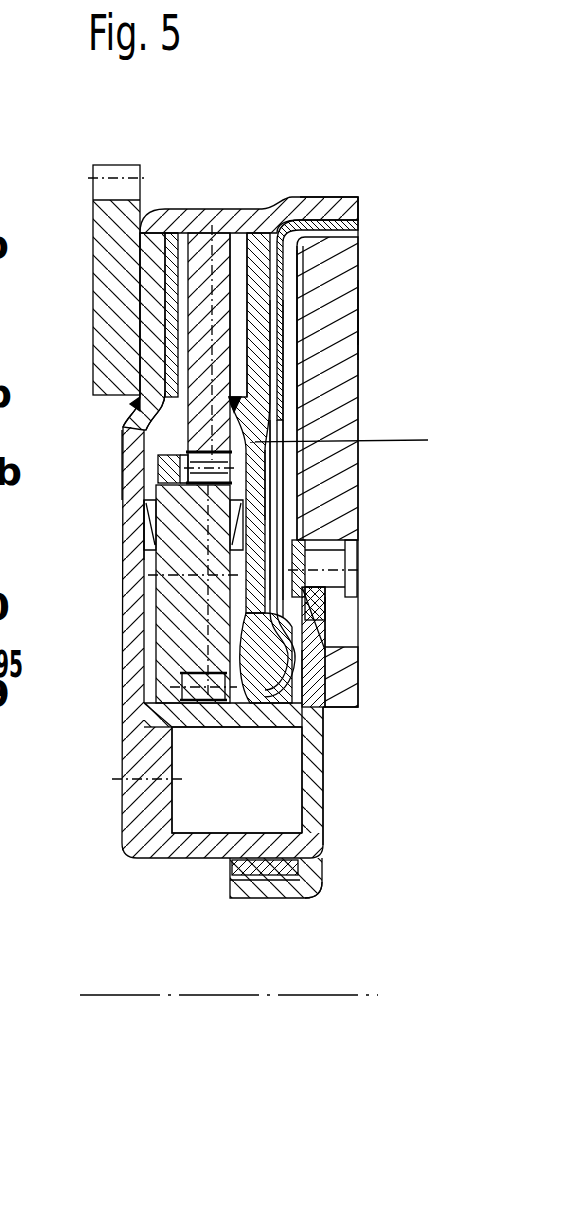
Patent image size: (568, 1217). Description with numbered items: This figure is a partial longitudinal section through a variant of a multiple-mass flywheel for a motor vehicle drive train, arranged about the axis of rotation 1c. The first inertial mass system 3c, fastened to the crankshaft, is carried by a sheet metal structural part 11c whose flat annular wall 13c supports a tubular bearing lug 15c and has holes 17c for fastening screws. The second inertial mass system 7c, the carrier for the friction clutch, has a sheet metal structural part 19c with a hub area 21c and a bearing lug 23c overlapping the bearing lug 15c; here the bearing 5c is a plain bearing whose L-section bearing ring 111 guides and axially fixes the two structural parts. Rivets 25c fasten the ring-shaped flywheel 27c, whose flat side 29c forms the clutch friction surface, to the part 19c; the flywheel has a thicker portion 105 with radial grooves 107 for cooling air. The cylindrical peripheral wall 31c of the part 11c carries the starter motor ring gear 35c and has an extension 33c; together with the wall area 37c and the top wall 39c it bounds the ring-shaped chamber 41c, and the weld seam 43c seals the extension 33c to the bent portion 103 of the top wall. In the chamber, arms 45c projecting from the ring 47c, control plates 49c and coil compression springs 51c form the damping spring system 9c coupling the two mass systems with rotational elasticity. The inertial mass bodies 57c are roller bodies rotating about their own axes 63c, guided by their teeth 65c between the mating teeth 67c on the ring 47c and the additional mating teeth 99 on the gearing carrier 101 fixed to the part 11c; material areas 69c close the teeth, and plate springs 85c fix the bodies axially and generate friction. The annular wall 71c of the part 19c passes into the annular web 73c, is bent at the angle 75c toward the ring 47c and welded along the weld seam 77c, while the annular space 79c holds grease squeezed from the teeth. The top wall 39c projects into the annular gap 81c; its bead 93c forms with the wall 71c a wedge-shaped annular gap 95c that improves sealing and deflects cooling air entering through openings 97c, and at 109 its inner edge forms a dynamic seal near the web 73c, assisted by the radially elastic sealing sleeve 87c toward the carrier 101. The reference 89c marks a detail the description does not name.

The axis of rotation 1c is at (172, 995).
The first inertial mass system 3c is at (108, 497).
The bearing 5c is at (232, 872).
The second inertial mass system 7c is at (358, 518).
The damping spring system 9c is at (208, 311).
The sheet metal structural part 11c is at (118, 701).
The annular wall 13c is at (150, 538).
The bearing lug 15c is at (232, 843).
The holes 17c is at (134, 794).
The sheet metal structural part 19c is at (325, 780).
The hub area 21c is at (318, 816).
The bearing lug 23c is at (253, 887).
The rivets 25c is at (332, 565).
The flywheel 27c is at (290, 437).
The flat side 29c is at (335, 350).
The cylindrical peripheral wall 31c is at (252, 220).
The extension 33c is at (333, 207).
The starter motor ring gear 35c is at (104, 209).
The wall area 37c is at (150, 323).
The top wall 39c is at (308, 288).
The chamber 41c is at (130, 413).
The weld seam 43c is at (358, 218).
The arms 45c is at (214, 252).
The ring 47c is at (250, 442).
The control plates 49c is at (298, 252).
The coil compression springs 51c is at (157, 357).
The inertial mass bodies 57c is at (168, 598).
The axis of rotation 63c is at (148, 576).
The teeth 65c is at (157, 468).
The mating teeth 67c is at (293, 470).
The material area 69c is at (150, 703).
The annular wall 71c is at (258, 532).
The annular web 73c is at (322, 706).
The angle 75c is at (290, 420).
The weld seam 77c is at (250, 392).
The annular space 79c is at (355, 444).
The annular gap 81c is at (292, 494).
The axially acting springs 85c is at (330, 612).
The sealing sleeve 87c is at (254, 706).
The tube hook 89c is at (300, 700).
The bead 93c is at (312, 657).
The wedge-shaped annular gap 95c is at (320, 673).
The openings 97c is at (315, 637).
The additional mating teeth 99 is at (193, 710).
The gearing carrier 101 is at (112, 779).
The bent portion 103 is at (310, 207).
The thicker portion 105 is at (312, 284).
The radial grooves 107 is at (308, 346).
The dynamic seal 109 is at (302, 738).
The bearing ring 111 is at (310, 893).